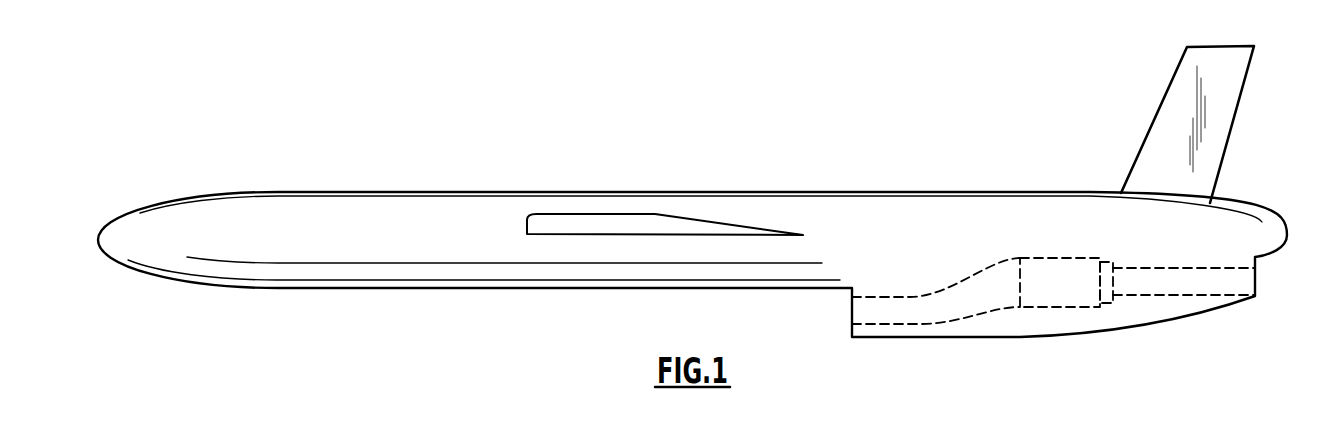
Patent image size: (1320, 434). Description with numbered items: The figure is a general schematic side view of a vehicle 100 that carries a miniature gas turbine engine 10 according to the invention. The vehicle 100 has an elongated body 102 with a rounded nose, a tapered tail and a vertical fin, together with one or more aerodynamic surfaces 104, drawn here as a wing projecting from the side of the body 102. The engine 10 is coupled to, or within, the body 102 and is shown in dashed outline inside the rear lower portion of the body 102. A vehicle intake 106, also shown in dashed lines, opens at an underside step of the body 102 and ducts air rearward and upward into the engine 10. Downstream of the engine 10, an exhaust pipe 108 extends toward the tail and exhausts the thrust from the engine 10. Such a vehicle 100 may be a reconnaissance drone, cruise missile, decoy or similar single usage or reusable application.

The vehicle 100 is at (645, 156).
The body 102 is at (366, 191).
The aerodynamic surface 104 is at (588, 236).
The vehicle intake 106 is at (903, 313).
The miniature gas turbine engine 10 is at (1060, 278).
The exhaust pipe 108 is at (1130, 282).